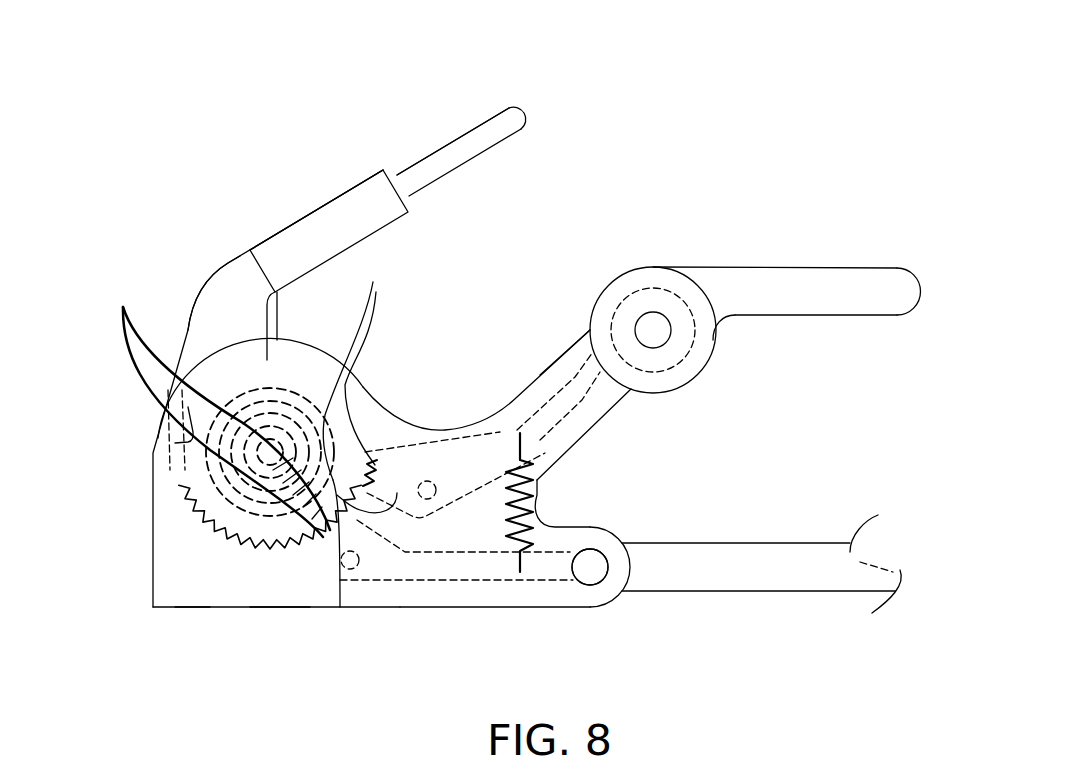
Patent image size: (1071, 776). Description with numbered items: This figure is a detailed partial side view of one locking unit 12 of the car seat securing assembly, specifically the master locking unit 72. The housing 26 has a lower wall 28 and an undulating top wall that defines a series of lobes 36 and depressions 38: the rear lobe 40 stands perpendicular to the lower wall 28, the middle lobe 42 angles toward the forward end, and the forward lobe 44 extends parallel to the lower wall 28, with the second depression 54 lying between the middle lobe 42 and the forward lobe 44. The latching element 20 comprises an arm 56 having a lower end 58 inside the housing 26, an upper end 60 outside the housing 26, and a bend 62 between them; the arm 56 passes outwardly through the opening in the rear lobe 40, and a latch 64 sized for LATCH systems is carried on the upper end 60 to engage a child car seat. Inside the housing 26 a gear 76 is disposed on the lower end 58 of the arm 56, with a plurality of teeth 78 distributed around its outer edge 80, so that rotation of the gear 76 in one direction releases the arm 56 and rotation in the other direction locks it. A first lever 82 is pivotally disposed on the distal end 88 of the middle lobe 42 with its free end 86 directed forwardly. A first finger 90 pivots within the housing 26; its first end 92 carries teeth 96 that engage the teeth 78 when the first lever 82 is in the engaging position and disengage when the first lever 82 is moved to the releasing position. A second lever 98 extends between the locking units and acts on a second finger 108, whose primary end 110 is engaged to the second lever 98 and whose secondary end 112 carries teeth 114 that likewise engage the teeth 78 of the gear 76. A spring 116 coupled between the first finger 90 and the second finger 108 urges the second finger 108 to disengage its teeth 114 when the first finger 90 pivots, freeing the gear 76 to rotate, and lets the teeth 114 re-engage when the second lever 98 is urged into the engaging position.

The locking unit 12 is at (278, 612).
The latching element 20 is at (355, 170).
The housing 26 is at (153, 598).
The lower wall 28 is at (383, 610).
The lobes 36 is at (276, 335).
The depressions 38 is at (436, 418).
The rear lobe 40 is at (159, 408).
The middle lobe 42 is at (686, 347).
The forward lobe 44 is at (630, 582).
The second depression 54 is at (558, 513).
The arm 56 is at (313, 208).
The lower end 58 is at (164, 437).
The upper end 60 is at (400, 195).
The bend 62 is at (195, 281).
The latch 64 is at (522, 118).
The master locking unit 72 is at (191, 610).
The gear 76 is at (308, 362).
The teeth 78 is at (222, 540).
The outer edge 80 is at (168, 483).
The first lever 82 is at (825, 268).
The free end 86 is at (923, 297).
The distal end 88 is at (684, 303).
The first finger 90 is at (575, 388).
The first end 92 is at (340, 585).
The teeth 96 is at (358, 365).
The second lever 98 is at (785, 592).
The second finger 108 is at (462, 585).
The primary end 110 is at (583, 583).
The secondary end 112 is at (397, 493).
The teeth 114 is at (123, 307).
The spring 116 is at (515, 458).